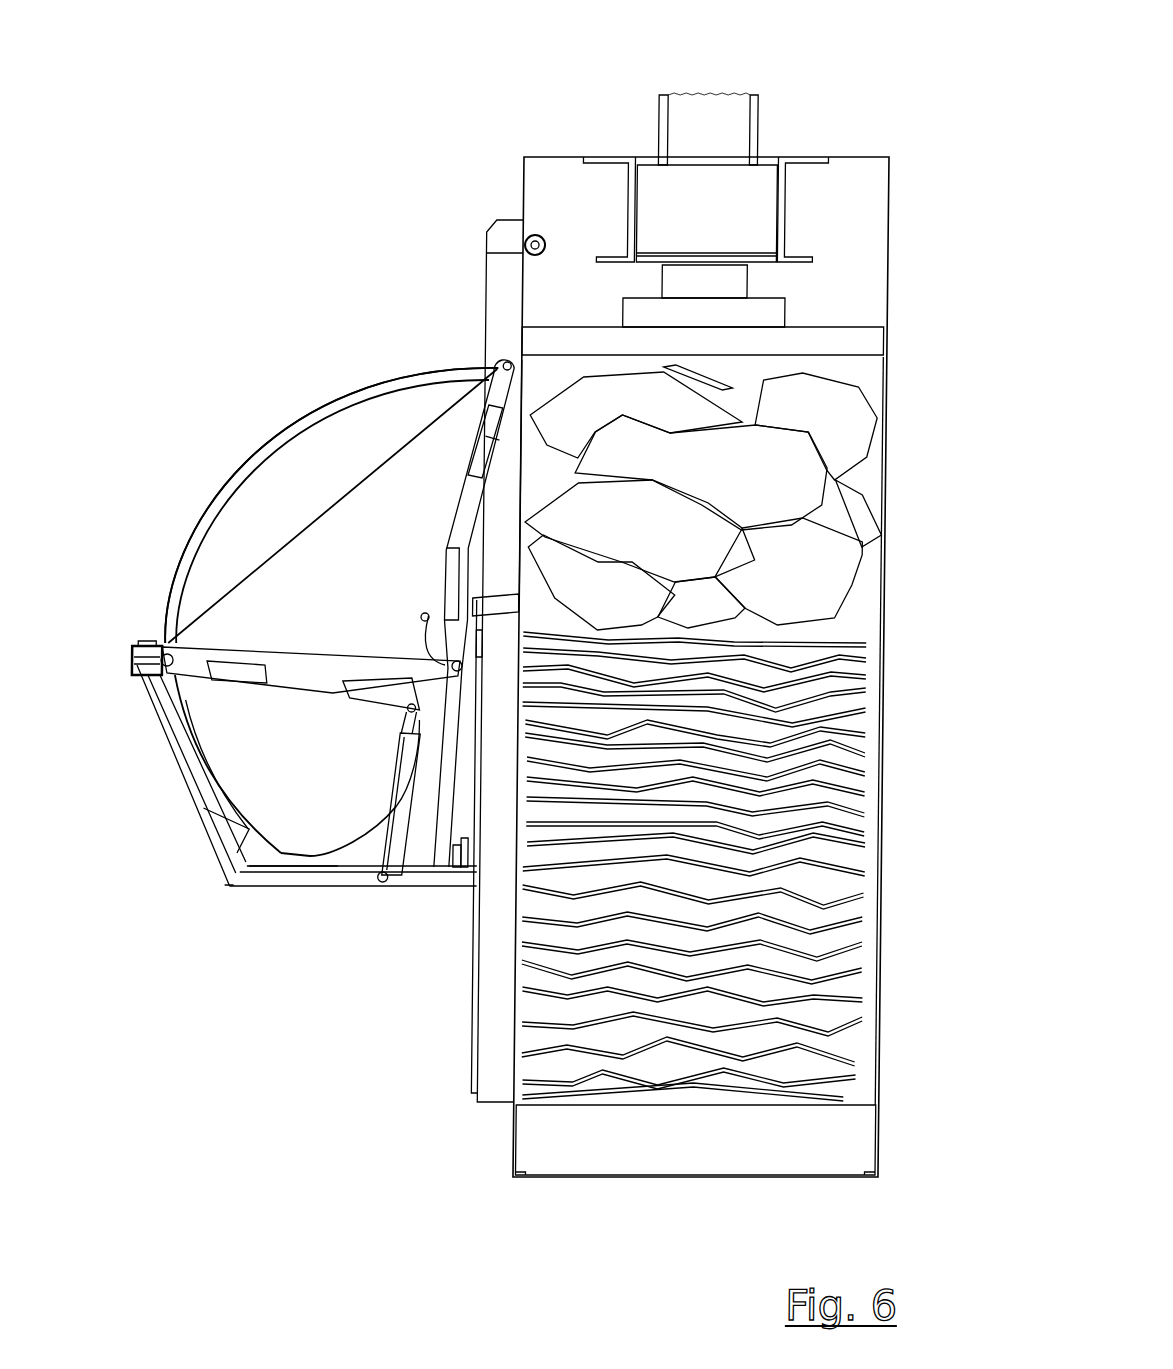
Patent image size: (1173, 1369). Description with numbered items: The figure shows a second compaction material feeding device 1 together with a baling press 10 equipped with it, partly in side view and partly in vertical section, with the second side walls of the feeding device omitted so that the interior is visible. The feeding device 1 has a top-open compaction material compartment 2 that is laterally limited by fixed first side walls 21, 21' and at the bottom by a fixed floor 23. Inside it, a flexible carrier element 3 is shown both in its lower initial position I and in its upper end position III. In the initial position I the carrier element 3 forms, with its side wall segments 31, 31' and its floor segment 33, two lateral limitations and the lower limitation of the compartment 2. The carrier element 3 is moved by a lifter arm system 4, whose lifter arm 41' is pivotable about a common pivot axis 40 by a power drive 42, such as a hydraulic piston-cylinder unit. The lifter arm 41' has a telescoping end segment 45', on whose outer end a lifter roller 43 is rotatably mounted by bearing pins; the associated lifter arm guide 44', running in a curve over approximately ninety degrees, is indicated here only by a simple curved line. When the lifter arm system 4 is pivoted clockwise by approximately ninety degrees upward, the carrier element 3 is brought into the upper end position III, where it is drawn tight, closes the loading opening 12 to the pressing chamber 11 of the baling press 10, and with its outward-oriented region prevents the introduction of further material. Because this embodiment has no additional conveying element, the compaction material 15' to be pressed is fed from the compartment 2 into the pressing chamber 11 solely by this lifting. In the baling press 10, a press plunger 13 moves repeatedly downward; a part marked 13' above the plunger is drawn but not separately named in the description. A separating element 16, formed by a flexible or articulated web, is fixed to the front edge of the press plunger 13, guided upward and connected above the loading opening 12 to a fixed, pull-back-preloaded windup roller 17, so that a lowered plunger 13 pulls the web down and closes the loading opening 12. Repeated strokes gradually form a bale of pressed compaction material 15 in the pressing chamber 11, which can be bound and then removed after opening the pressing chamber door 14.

The compaction material feeding device 1 is at (189, 468).
The compaction material compartment 2 is at (269, 757).
The carrier element 3 is at (345, 474).
The lifter arm system 4 is at (440, 548).
The baling press 10 is at (834, 110).
The pressing chamber 11 is at (858, 610).
The loading opening 12 is at (503, 509).
The press plunger 13 is at (706, 322).
The press rods 13' is at (657, 124).
The pressing chamber door 14 is at (493, 998).
The pressed compaction material 15 is at (692, 932).
The compaction material to be pressed 15' is at (747, 497).
The separating element 16 is at (521, 290).
The windup roller 17 is at (541, 246).
The fixed first side wall 21 is at (247, 776).
The fixed first side wall 21' is at (423, 833).
The fixed floor 23 is at (348, 852).
The side wall segment 31 is at (177, 774).
The side wall segment 31' is at (403, 719).
The floor segment 33 is at (309, 854).
The pivot axis 40 is at (453, 705).
The lifter arm 41' is at (424, 613).
The power drive 42 is at (389, 842).
The lifter roller 43 is at (167, 683).
The lifter arm guide 44' is at (332, 480).
The telescoping end segment 45' is at (435, 436).
The initial position I is at (227, 863).
The upper end position III is at (304, 523).